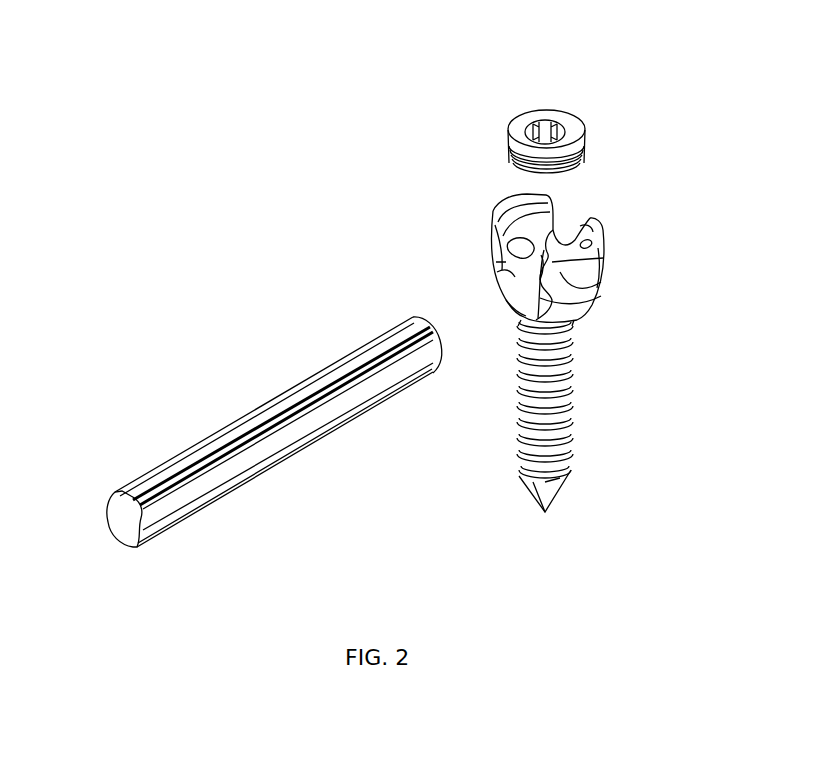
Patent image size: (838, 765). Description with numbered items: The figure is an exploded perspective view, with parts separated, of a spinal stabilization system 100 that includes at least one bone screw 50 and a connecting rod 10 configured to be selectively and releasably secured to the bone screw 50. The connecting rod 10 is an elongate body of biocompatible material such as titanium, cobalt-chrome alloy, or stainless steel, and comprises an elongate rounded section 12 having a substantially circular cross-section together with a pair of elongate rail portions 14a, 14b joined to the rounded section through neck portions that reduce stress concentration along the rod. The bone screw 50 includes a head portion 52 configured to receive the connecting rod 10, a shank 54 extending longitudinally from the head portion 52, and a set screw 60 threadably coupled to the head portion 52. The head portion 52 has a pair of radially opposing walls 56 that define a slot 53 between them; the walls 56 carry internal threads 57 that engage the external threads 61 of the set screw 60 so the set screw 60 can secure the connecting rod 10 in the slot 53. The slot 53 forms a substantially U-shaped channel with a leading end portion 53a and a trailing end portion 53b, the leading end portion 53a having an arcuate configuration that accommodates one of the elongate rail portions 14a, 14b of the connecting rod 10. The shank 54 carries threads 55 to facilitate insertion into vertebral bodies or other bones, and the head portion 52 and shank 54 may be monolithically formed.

The spinal stabilization system 100 is at (395, 218).
The connecting rod 10 is at (248, 422).
The elongate rounded section 12 is at (122, 517).
The elongate rail portion 14a is at (157, 473).
The elongate rail portion 14b is at (128, 548).
The bone screw 50 is at (653, 215).
The head portion 52 is at (572, 303).
The slot 53 is at (572, 217).
The leading end portion 53a is at (512, 305).
The trailing end portion 53b is at (535, 268).
The shank 54 is at (570, 372).
The threads 55 is at (570, 428).
The radially opposing walls 56 is at (507, 225).
The internal threads 57 is at (523, 213).
The set screw 60 is at (563, 120).
The external threads 61 is at (585, 143).